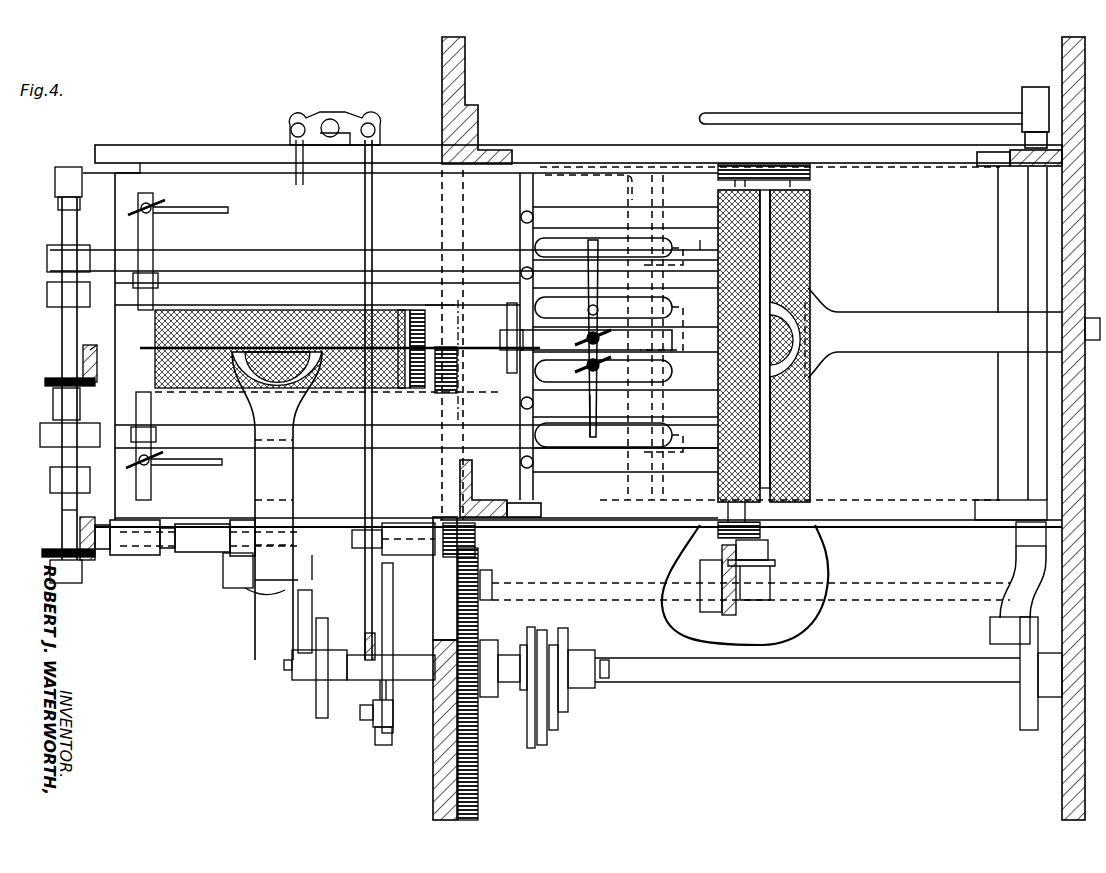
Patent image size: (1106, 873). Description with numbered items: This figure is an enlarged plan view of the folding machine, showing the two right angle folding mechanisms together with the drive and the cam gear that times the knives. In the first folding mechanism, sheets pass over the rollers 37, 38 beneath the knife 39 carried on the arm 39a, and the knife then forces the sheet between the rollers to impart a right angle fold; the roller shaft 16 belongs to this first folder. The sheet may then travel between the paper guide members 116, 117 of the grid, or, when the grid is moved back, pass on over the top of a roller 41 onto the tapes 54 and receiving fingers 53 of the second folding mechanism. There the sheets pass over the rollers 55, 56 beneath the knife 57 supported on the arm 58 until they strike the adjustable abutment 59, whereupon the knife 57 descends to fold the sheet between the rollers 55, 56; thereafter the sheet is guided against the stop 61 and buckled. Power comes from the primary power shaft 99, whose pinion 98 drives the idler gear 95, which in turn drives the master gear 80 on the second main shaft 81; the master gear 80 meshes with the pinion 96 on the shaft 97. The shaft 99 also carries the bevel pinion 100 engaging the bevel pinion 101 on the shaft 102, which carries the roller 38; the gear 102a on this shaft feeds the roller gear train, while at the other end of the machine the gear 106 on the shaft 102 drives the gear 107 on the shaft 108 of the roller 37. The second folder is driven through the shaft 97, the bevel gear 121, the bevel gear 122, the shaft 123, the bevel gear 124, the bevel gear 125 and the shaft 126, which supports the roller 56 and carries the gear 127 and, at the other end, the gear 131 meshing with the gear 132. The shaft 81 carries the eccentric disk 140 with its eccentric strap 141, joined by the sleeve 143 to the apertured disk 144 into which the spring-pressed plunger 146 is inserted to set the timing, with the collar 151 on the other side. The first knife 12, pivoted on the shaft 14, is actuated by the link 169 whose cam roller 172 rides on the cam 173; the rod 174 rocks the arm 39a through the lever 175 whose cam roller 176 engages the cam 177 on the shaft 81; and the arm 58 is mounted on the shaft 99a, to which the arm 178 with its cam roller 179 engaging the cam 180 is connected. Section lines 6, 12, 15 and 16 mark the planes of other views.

The shaft end 6 is at (480, 335).
The knife 12 is at (275, 100).
The shaft 14 is at (694, 168).
The section line 15 is at (672, 518).
The roller shaft 16 is at (452, 334).
The roller 37 is at (795, 440).
The roller 38 is at (718, 380).
The knife 39 is at (765, 413).
The arm 39a is at (898, 332).
The lever 41 is at (596, 406).
The receiving plates or fingers 53 is at (180, 180).
The tapes 54 is at (215, 295).
The roller 55 is at (246, 315).
The roller 56 is at (200, 388).
The knife 57 is at (295, 318).
The arm 58 is at (252, 402).
The adjustable abutment 59 is at (150, 488).
The stop 61 is at (511, 338).
The master gear 80 is at (478, 744).
The second main shaft 81 is at (420, 660).
The idler gear 95 is at (470, 560).
The pinion 96 is at (478, 535).
The shaft 97 is at (432, 540).
The pinion 98 is at (486, 598).
The primary power shaft 99 is at (785, 555).
The shaft 99a is at (255, 585).
The bevel pinion 100 is at (730, 612).
The bevel pinion 101 is at (740, 590).
The shaft 102 is at (760, 535).
The gear 102a is at (730, 538).
The gear 106 is at (728, 165).
The gear 107 is at (766, 165).
The shaft 108 is at (800, 165).
The paper guide member 116 is at (588, 232).
The paper guide member 117 is at (690, 242).
The bevel gear 121 is at (94, 556).
The bevel gear 122 is at (48, 552).
The shaft 123 is at (62, 512).
The bevel gear 124 is at (45, 385).
The bevel gear 125 is at (92, 345).
The shaft 126 is at (85, 355).
The gear 127 is at (458, 380).
The gear 131 is at (416, 390).
The gear 132 is at (440, 302).
The eccentrically-positioned disk member 140 is at (550, 732).
The eccentric strap 141 is at (538, 748).
The sleeve 143 is at (556, 640).
The disk 144 is at (568, 710).
The spring-pressed plunger 146 is at (605, 660).
The collar 151 is at (522, 688).
The link 169 is at (368, 645).
The cam roller 172 is at (388, 703).
The cam 173 is at (385, 745).
The rod 174 is at (1030, 238).
The lever 175 is at (1018, 565).
The cam roller 176 is at (990, 632).
The cam 177 is at (1020, 718).
The arm 178 is at (300, 610).
The cam roller 179 is at (300, 655).
The cam 180 is at (320, 720).